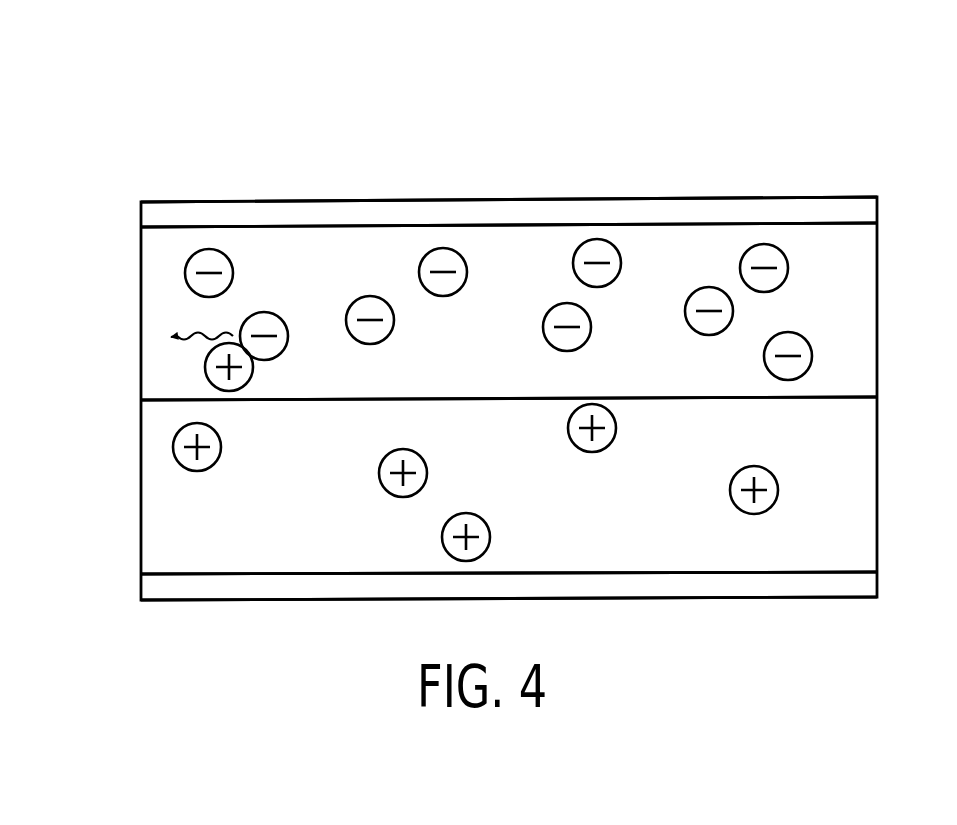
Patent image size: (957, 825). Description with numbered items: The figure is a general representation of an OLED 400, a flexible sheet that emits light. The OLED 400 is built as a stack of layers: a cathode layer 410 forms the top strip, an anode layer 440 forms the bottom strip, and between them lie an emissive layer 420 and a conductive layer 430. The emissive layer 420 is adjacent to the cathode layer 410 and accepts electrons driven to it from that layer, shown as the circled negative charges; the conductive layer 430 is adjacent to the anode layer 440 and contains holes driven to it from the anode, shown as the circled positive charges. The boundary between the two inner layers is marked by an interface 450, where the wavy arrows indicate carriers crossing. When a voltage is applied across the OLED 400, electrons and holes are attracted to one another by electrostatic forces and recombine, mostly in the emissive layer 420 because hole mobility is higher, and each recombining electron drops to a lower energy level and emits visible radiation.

The OLED 400 is at (134, 99).
The cathode layer 410 is at (165, 215).
The emissive layer 420 is at (165, 310).
The conductive layer 430 is at (160, 507).
The anode layer 440 is at (160, 585).
The junction interface 450 is at (180, 369).